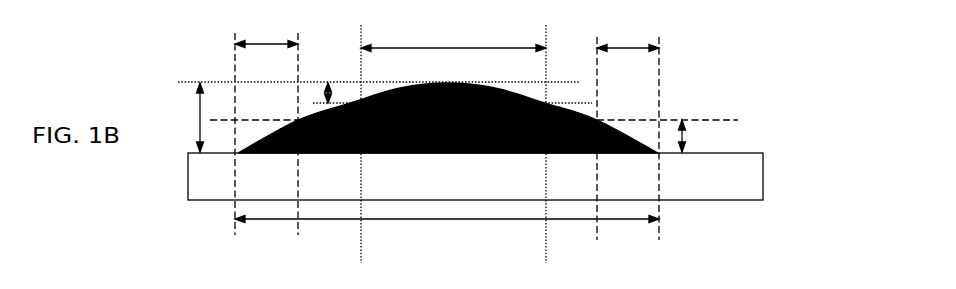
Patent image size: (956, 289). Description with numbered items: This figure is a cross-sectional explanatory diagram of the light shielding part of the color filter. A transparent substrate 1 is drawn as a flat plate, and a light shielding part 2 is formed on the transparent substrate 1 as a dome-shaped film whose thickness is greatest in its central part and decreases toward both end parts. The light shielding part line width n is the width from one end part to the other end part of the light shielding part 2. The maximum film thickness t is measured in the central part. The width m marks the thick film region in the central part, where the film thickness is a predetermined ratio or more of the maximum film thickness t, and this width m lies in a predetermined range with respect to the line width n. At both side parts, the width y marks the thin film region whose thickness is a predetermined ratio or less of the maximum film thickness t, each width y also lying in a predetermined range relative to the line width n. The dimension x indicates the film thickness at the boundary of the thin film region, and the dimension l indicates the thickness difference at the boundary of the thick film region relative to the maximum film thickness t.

The transparent substrate 1 is at (740, 175).
The light shielding part 2 is at (438, 153).
The edge thickness dimension x is at (690, 136).
The width of thin film region y is at (447, 36).
The width of thick film region m is at (453, 37).
The light shielding part line width n is at (447, 234).
The maximum film thickness t is at (194, 117).
The central region height variation dimension l is at (322, 94).